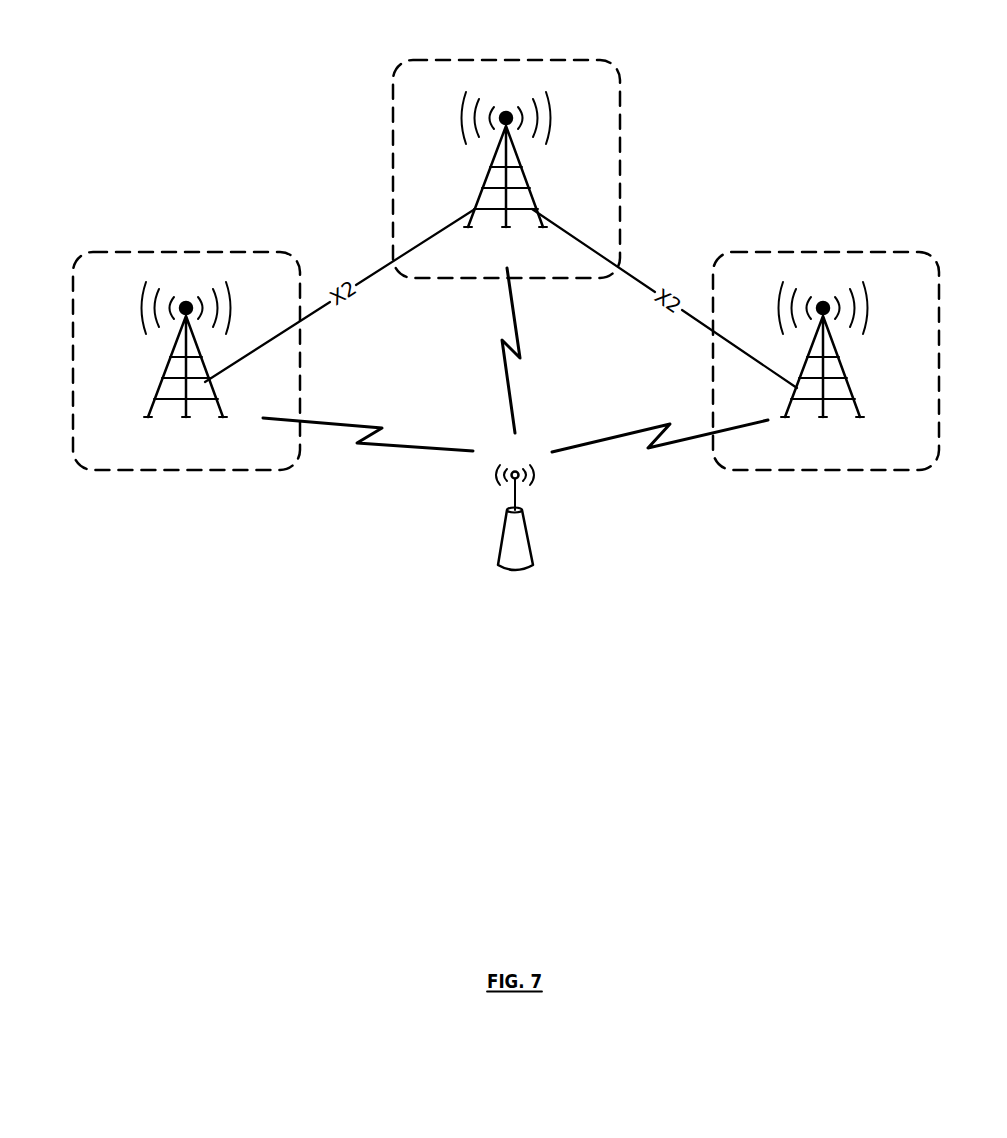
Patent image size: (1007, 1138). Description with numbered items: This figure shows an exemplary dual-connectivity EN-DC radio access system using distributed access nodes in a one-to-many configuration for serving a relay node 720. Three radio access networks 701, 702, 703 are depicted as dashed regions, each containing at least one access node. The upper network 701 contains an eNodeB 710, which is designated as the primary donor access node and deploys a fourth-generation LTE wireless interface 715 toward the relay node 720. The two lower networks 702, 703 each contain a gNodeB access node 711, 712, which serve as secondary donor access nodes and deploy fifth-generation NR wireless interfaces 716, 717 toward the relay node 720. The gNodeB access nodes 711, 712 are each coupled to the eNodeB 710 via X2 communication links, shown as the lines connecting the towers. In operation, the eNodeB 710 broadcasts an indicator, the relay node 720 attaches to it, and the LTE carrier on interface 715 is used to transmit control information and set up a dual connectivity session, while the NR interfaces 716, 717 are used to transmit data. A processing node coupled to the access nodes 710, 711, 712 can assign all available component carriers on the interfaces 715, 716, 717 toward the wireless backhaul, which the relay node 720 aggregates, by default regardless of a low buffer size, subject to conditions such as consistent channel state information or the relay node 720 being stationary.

The radio access network 701 is at (437, 58).
The radio access network 702 is at (125, 252).
The radio access network 703 is at (830, 252).
The eNodeB 710 is at (488, 192).
The gNodeB access node 711 is at (160, 397).
The gNodeB access node 712 is at (850, 390).
The 4G LTE wireless interface 715 is at (500, 349).
The 5G NR wireless interface 716 is at (398, 447).
The 5G NR wireless interface 717 is at (650, 427).
The relay node 720 is at (500, 539).